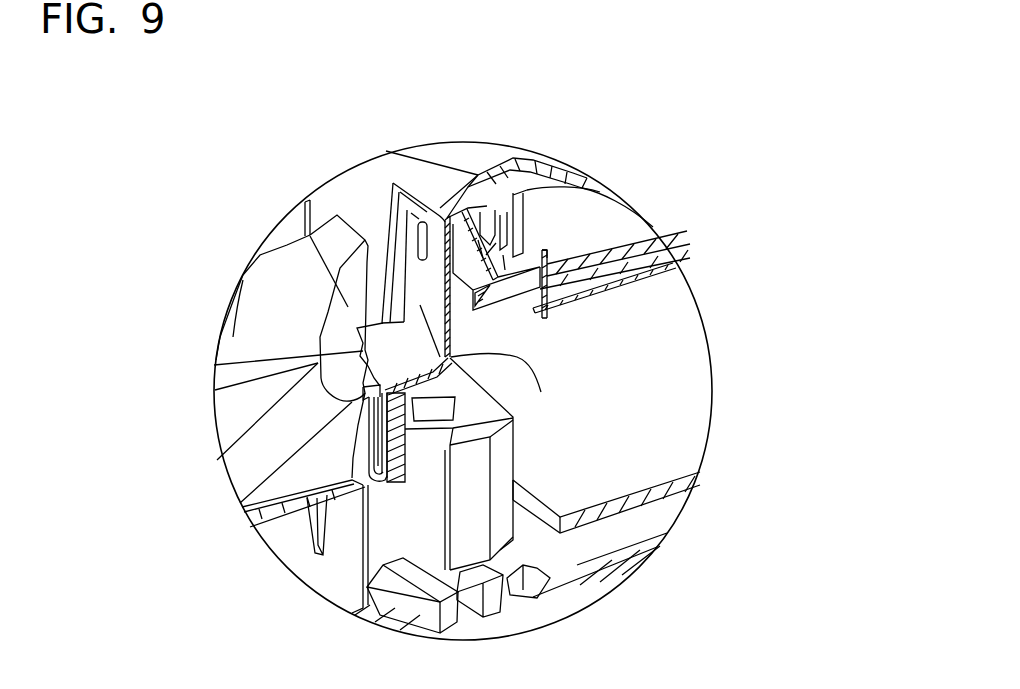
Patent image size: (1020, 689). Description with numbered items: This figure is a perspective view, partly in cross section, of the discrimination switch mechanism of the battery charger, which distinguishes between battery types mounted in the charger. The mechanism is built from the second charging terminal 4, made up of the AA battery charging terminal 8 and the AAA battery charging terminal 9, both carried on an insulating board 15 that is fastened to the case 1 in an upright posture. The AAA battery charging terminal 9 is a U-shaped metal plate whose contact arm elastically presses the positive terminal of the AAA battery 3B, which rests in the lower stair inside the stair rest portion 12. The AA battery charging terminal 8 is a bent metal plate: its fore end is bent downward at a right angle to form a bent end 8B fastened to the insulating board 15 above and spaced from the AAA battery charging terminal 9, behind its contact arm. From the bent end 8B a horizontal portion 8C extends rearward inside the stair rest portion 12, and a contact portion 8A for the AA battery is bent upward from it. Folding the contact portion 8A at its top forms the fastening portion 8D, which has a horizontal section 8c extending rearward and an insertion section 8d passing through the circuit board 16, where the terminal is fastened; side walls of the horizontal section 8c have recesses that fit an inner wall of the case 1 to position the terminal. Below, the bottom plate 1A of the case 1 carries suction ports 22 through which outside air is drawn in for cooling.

The case 1 is at (543, 170).
The bottom plate 1A is at (588, 572).
The AAA battery 3B is at (242, 372).
The second charging terminal 4 is at (608, 400).
The AA battery charging terminal 8 is at (541, 392).
The contact portion 8A is at (410, 240).
The bent end 8B is at (323, 337).
The horizontal portion 8C is at (310, 233).
The horizontal section 8c is at (575, 212).
The fastening portion 8D is at (543, 257).
The insertion section 8d is at (528, 318).
The AAA battery charging terminal 9 is at (460, 430).
The stair rest portion 12 is at (348, 307).
The insulating board 15 is at (405, 484).
The circuit board 16 is at (597, 270).
The suction ports 22 is at (470, 623).